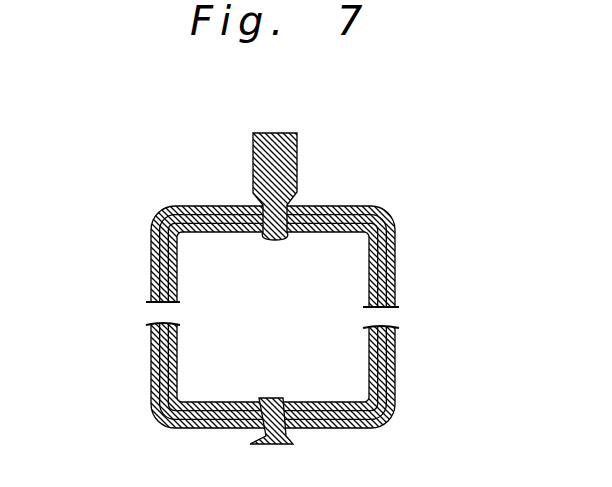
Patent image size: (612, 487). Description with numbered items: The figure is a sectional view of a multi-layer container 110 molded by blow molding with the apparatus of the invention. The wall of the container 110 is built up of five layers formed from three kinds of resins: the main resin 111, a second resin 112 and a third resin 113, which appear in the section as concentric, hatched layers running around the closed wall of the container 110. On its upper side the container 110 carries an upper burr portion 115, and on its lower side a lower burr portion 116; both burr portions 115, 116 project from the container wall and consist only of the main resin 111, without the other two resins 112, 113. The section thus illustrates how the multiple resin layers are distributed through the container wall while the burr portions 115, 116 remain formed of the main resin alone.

The multi-layer container 110 is at (275, 290).
The main resin 111 is at (155, 218).
The resin 112 is at (150, 280).
The resin 113 is at (150, 253).
The upper burr portion 115 is at (298, 159).
The lower burr portion 116 is at (270, 447).